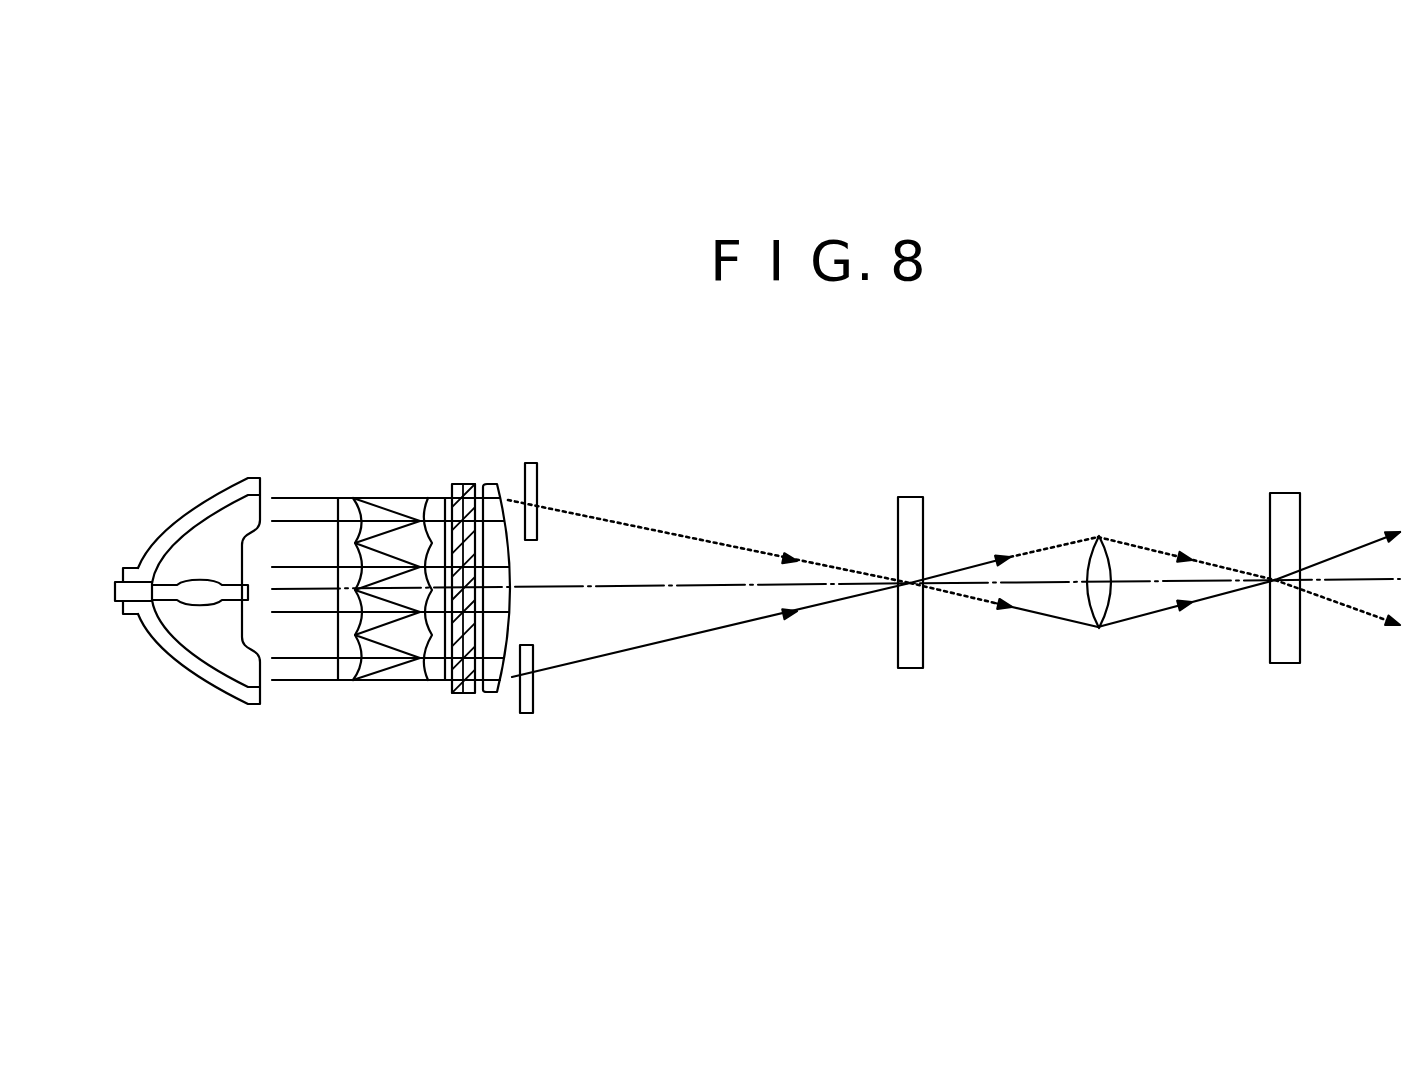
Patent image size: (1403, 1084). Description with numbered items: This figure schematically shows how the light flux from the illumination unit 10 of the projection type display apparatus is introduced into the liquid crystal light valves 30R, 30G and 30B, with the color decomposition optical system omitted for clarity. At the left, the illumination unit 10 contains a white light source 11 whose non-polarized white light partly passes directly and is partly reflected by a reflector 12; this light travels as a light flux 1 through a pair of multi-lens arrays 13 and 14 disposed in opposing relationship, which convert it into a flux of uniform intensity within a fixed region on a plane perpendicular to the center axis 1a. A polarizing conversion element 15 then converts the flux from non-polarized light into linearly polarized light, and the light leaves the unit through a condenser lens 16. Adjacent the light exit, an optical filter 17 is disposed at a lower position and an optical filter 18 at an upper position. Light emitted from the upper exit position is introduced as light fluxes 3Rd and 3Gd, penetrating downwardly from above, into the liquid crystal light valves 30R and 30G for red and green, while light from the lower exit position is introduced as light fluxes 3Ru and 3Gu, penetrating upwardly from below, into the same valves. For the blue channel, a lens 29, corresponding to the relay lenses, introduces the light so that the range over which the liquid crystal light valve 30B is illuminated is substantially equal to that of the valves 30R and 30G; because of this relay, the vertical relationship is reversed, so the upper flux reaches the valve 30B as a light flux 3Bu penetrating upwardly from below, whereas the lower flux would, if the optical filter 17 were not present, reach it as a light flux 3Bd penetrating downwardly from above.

The illumination unit 10 is at (522, 428).
The light flux 1 is at (302, 497).
The center axis 1a is at (399, 512).
The white light source 11 is at (203, 603).
The reflector 12 is at (146, 628).
The multi-lens array 13 is at (342, 682).
The multi-lens array 14 is at (430, 674).
The polarizing conversion element 15 is at (462, 695).
The condenser lens 16 is at (487, 693).
The optical filter 17 is at (533, 700).
The optical filter 18 is at (537, 482).
The light flux 3Rd is at (709, 540).
The light flux 3Gd is at (835, 572).
The light flux 3Ru is at (711, 630).
The light flux 3Gu is at (835, 605).
The liquid crystal light valve 30R is at (954, 611).
The liquid crystal light valve 30G is at (910, 668).
The lens 29 is at (1098, 535).
The light flux 3Bd is at (1148, 547).
The light flux 3Bu is at (1134, 619).
The liquid crystal light valve 30B is at (1300, 505).